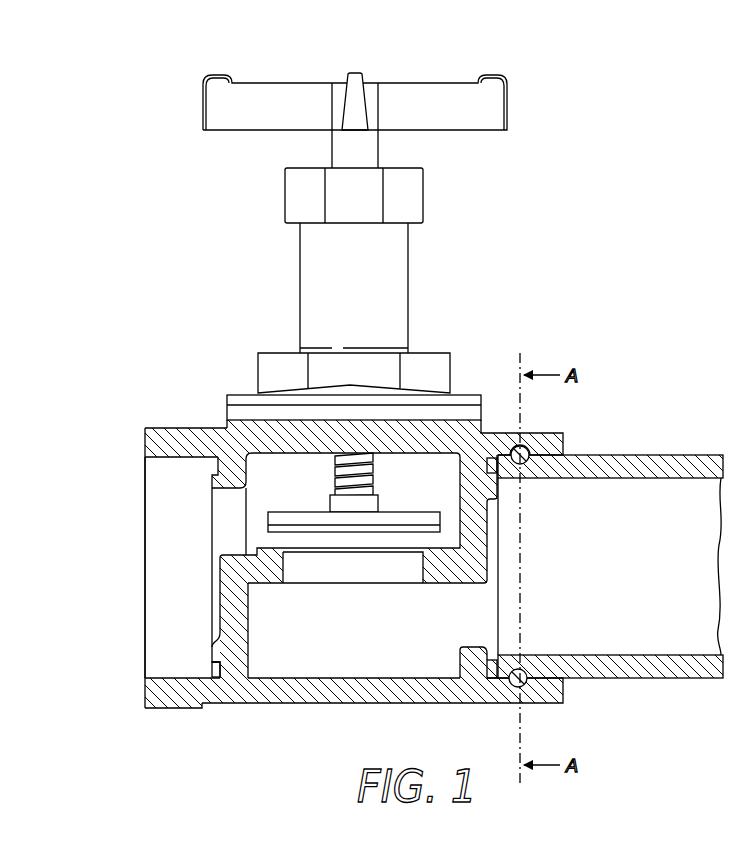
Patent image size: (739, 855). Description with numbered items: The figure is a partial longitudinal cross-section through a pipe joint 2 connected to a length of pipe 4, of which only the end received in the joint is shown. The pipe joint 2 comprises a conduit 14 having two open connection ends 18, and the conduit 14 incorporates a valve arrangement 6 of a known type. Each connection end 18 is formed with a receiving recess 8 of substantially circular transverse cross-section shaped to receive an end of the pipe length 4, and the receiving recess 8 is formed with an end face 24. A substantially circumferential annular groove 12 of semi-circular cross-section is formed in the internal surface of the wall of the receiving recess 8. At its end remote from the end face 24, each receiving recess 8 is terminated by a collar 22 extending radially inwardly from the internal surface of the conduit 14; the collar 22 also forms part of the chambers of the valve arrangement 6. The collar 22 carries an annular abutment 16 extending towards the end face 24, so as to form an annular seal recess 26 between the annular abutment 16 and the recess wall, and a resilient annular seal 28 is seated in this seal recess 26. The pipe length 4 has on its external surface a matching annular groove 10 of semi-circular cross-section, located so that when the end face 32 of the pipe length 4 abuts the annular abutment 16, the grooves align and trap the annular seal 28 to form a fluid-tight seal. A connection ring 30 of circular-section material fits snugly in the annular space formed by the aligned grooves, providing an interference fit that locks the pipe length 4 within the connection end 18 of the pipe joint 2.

The pipe joint 2 is at (343, 715).
The pipe length 4 is at (647, 455).
The valve arrangement 6 is at (395, 282).
The receiving recess 8 is at (165, 466).
The annular groove 10 is at (528, 464).
The annular groove 12 is at (528, 440).
The conduit 14 is at (294, 703).
The annular abutment 16 is at (208, 478).
The connection end 18 is at (166, 415).
The collar 22 is at (473, 498).
The end face 24 is at (562, 433).
The annular seal recess 26 is at (487, 667).
The resilient annular seal 28 is at (487, 462).
The connection ring 30 is at (512, 687).
The end face 32 is at (487, 648).